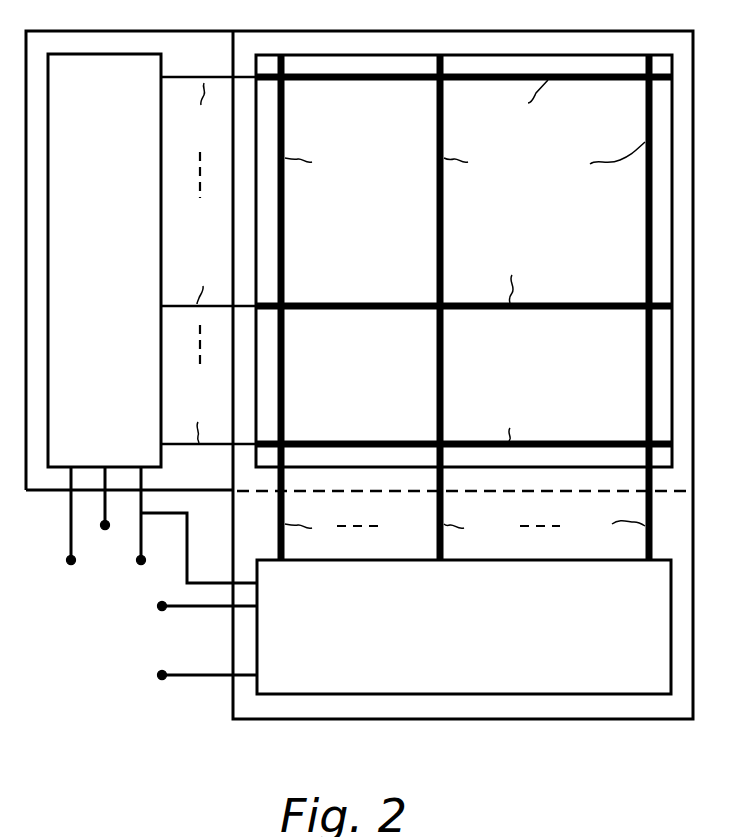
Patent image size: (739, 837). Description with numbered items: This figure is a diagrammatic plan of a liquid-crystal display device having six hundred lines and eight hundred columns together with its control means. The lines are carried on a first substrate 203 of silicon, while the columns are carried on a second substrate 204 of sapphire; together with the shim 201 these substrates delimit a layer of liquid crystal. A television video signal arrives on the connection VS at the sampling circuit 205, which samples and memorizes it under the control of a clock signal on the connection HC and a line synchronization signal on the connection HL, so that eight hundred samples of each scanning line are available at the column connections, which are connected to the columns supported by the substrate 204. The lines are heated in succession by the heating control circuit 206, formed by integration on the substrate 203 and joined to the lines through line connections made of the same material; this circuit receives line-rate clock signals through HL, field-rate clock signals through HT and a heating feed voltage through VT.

The shim 201 is at (377, 14).
The first substrate 203 is at (228, 14).
The second substrate 204 is at (578, 706).
The sampling circuit 205 is at (493, 673).
The heating control circuit 206 is at (108, 68).